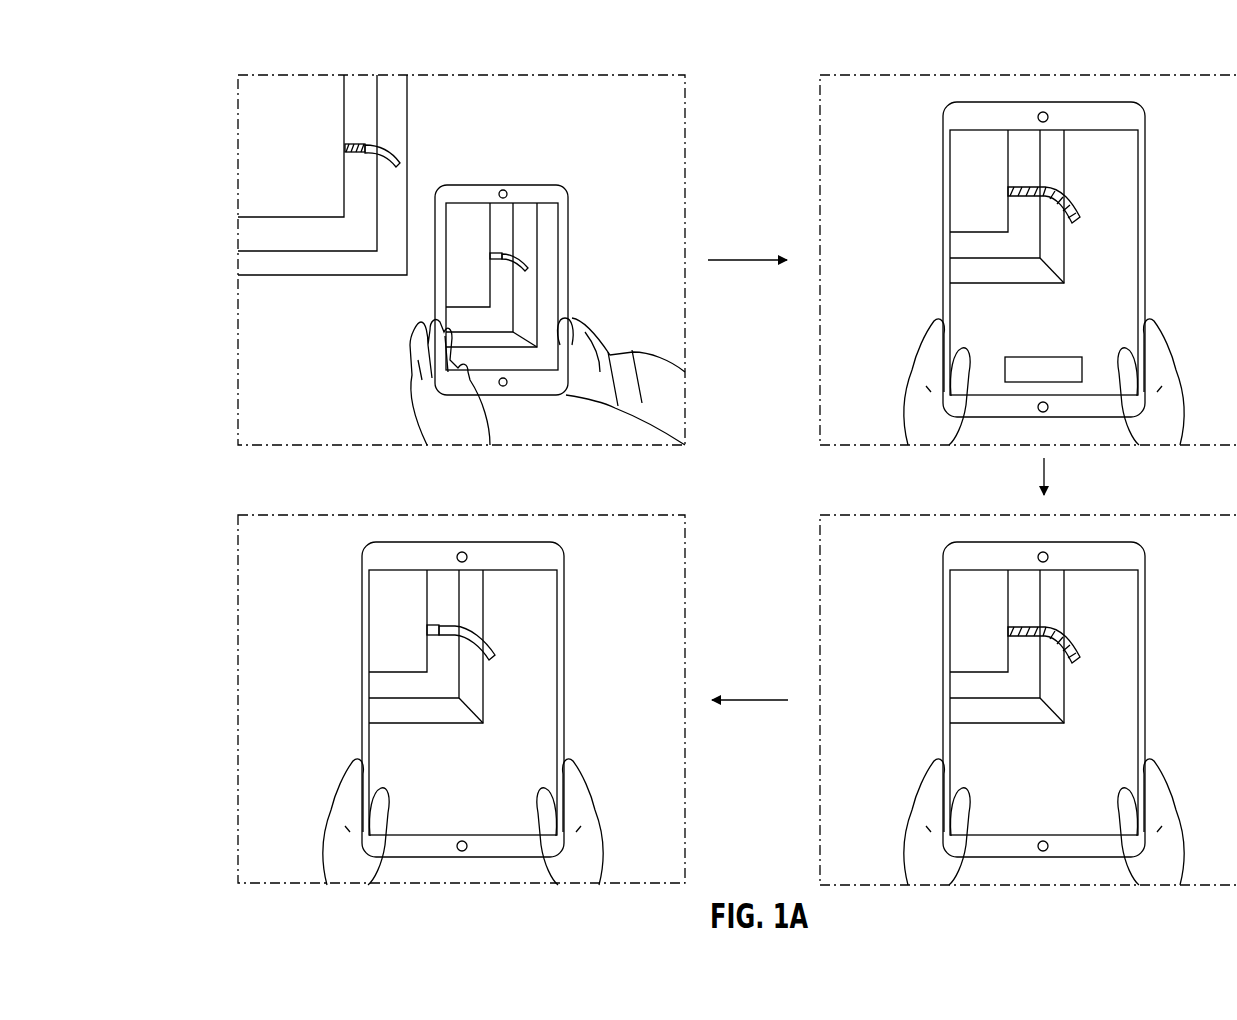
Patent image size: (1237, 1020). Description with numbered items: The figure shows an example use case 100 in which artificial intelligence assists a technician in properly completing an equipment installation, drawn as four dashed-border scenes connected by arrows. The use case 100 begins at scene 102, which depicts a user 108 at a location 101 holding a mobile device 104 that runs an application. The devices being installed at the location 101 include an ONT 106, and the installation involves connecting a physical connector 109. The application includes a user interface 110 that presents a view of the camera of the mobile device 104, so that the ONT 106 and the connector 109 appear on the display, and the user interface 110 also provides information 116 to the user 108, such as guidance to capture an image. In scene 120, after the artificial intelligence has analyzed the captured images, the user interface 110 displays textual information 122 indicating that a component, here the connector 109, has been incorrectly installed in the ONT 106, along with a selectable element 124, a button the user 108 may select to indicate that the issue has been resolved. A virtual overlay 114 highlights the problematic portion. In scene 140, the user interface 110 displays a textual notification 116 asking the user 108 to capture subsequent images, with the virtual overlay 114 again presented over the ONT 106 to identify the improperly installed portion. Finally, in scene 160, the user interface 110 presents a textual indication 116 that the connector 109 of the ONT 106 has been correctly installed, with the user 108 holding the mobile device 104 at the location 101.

The use case 100 is at (213, 48).
The location 101 is at (648, 125).
The scene 102 is at (302, 75).
The mobile device 104 is at (535, 184).
The ONT 106 is at (325, 277).
The user 108 is at (440, 395).
The connector 109 is at (378, 145).
The user interface 110 is at (526, 244).
The virtual overlay 114 is at (1031, 178).
The information 116 is at (513, 373).
The scene 120 is at (886, 75).
The textual information 122 is at (1109, 300).
The selectable element 124 is at (1093, 368).
The scene 140 is at (886, 515).
The scene 160 is at (304, 515).